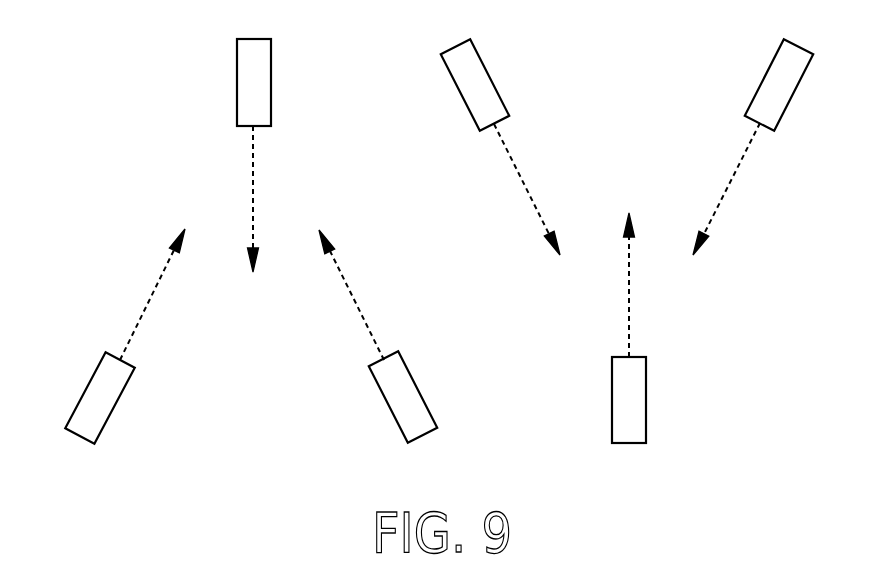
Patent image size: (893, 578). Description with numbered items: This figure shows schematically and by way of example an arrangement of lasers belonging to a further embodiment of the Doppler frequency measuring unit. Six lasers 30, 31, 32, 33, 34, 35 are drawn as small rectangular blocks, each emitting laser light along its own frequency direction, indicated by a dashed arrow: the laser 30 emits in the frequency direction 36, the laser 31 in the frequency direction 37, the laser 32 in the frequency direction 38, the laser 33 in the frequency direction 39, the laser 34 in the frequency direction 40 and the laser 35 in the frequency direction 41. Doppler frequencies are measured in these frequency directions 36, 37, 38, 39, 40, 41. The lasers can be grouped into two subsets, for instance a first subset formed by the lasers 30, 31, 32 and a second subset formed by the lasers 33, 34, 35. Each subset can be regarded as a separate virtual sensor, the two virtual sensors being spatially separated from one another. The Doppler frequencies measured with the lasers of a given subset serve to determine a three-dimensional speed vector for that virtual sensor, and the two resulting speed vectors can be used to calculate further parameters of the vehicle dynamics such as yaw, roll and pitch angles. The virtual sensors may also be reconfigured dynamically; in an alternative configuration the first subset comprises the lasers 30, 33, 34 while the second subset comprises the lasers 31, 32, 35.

The laser 30 is at (80, 400).
The laser 31 is at (237, 82).
The laser 32 is at (418, 390).
The laser 33 is at (455, 90).
The laser 34 is at (612, 400).
The laser 35 is at (795, 95).
The frequency direction 36 is at (145, 309).
The frequency direction 37 is at (252, 188).
The frequency direction 38 is at (358, 310).
The frequency direction 39 is at (530, 192).
The frequency direction 40 is at (627, 297).
The frequency direction 41 is at (720, 202).